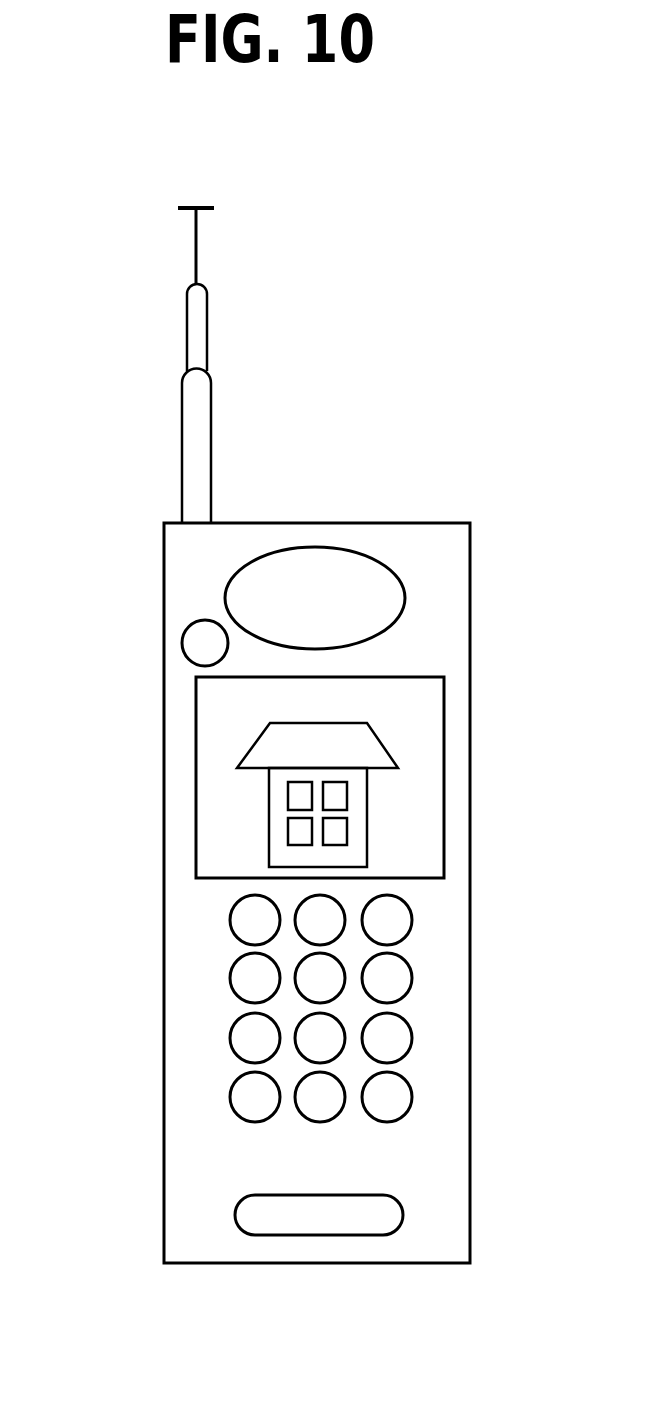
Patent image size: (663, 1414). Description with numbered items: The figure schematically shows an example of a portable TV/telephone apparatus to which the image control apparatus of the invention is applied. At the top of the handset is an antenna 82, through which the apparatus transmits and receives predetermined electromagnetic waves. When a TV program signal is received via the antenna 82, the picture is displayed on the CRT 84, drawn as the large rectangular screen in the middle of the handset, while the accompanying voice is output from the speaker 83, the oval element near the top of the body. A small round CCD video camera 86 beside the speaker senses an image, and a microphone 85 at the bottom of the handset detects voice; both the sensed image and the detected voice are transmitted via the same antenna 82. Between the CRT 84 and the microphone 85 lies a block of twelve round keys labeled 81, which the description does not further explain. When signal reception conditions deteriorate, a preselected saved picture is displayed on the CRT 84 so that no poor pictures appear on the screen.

The keypad 81 is at (131, 887).
The antenna 82 is at (208, 320).
The speaker 83 is at (310, 568).
The CRT 84 is at (445, 773).
The microphone 85 is at (318, 1237).
The CCD video camera 86 is at (182, 636).